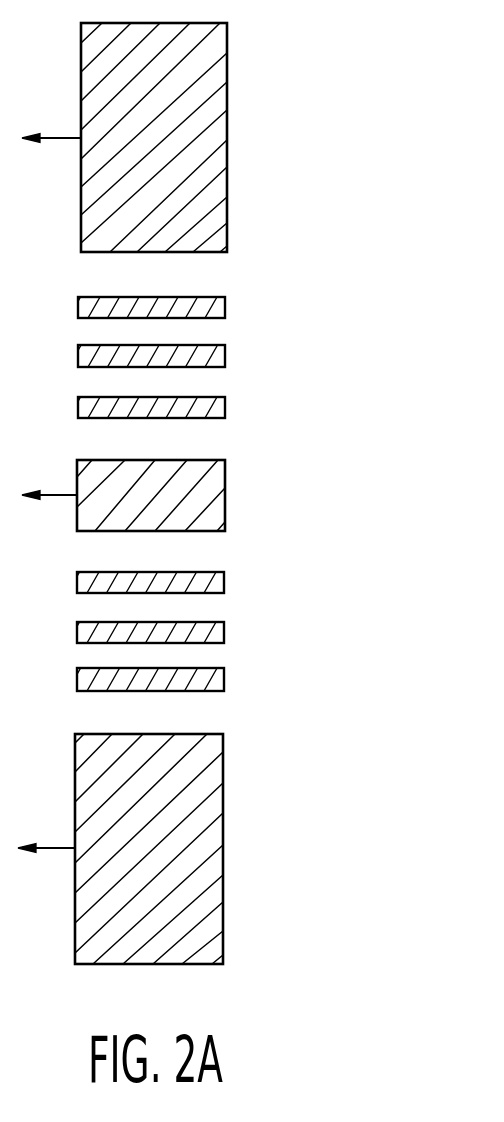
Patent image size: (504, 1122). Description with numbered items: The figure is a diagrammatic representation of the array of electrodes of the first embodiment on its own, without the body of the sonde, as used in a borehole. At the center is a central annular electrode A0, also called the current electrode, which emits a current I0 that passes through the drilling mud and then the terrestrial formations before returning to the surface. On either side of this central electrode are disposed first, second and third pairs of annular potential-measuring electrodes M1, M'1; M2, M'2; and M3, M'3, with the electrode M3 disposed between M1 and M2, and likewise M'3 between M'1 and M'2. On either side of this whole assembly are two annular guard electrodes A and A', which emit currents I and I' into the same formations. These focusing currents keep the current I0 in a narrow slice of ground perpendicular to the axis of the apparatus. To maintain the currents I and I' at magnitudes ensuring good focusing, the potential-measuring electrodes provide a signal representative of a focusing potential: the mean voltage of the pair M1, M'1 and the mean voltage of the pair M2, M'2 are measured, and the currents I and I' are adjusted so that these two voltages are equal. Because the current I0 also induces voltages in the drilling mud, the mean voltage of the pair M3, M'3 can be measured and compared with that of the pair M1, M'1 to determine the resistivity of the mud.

The guard electrode A is at (182, 137).
The focusing current I is at (51, 121).
The potential-measuring electrode M2 is at (225, 306).
The potential-measuring electrode M3 is at (225, 353).
The potential-measuring electrode M1 is at (225, 405).
The central annular electrode A0 is at (220, 500).
The current I0 is at (23, 459).
The potential-measuring electrode M'1 is at (198, 579).
The potential-measuring electrode M'3 is at (197, 637).
The potential-measuring electrode M'2 is at (197, 690).
The guard electrode A' is at (190, 849).
The focusing current I' is at (46, 830).